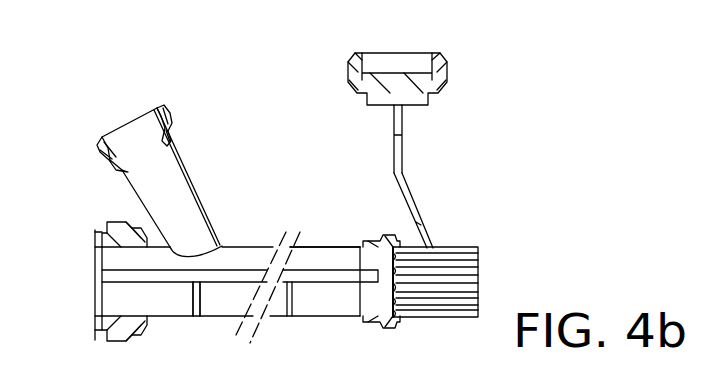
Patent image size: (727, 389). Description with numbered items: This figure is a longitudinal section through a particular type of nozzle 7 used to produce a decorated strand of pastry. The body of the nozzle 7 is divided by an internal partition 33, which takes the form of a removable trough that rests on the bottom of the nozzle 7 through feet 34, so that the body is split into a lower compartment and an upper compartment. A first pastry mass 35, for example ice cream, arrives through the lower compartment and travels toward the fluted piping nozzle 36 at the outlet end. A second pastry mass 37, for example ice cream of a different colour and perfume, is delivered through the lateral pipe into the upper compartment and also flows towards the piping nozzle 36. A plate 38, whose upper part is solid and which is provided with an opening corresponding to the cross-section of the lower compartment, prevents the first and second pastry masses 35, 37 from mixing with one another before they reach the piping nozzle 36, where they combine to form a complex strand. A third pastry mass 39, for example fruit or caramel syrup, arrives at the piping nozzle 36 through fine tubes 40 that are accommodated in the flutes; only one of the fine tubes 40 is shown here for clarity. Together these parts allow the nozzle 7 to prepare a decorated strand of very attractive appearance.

The nozzle 7 is at (325, 246).
The internal partition 33 is at (226, 279).
The feet 34 is at (200, 318).
The first pastry mass 35 is at (92, 288).
The fluted piping nozzle 36 is at (447, 320).
The second pastry mass 37 is at (122, 117).
The plate 38 is at (93, 266).
The third pastry mass 39 is at (414, 24).
The fine tubes 40 is at (478, 226).